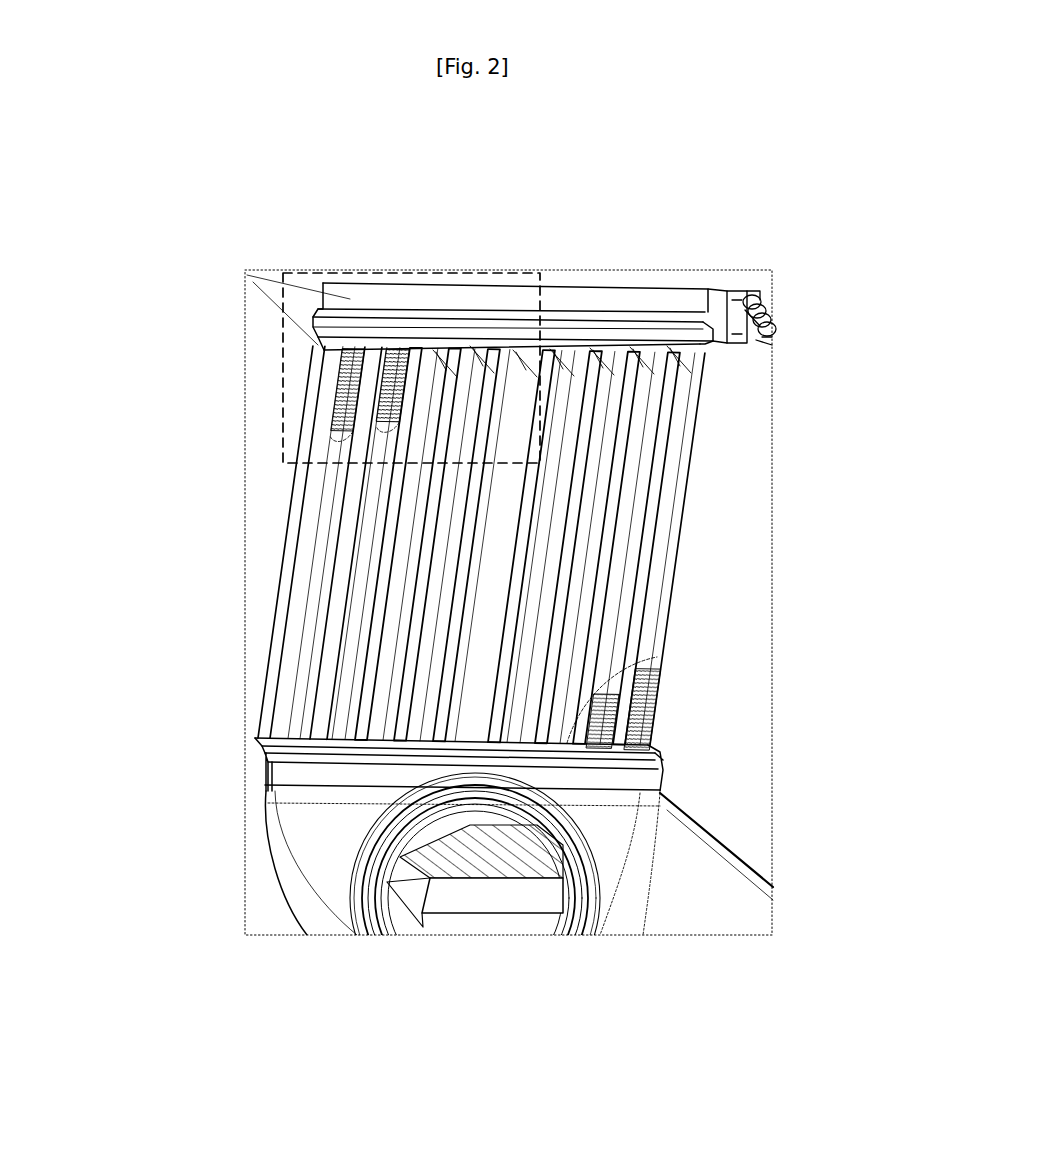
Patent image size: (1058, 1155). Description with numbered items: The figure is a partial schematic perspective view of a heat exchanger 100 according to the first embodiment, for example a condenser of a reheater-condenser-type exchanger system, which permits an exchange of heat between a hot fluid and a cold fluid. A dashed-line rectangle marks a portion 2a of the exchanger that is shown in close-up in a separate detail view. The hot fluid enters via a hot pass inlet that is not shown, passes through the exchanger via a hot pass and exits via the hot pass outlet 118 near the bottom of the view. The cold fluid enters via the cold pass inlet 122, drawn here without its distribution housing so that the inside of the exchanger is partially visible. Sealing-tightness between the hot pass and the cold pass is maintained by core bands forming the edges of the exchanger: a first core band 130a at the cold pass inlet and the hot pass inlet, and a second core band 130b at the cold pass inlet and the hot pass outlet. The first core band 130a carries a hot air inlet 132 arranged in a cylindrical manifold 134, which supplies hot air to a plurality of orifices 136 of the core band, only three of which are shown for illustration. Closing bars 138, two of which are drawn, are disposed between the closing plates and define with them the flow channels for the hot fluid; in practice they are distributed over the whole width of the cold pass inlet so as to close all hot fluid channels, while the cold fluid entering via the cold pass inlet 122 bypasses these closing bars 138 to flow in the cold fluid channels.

The heat exchanger 100 is at (222, 242).
The portion 2a is at (358, 271).
The hot pass outlet 118 is at (480, 898).
The cold pass inlet 122 is at (362, 598).
The first core band 130a is at (338, 299).
The second core band 130b is at (278, 773).
The hot air inlet 132 is at (760, 326).
The cylindrical manifold 134 is at (709, 312).
The orifices 136 is at (413, 338).
The closing bars 138 is at (333, 340).